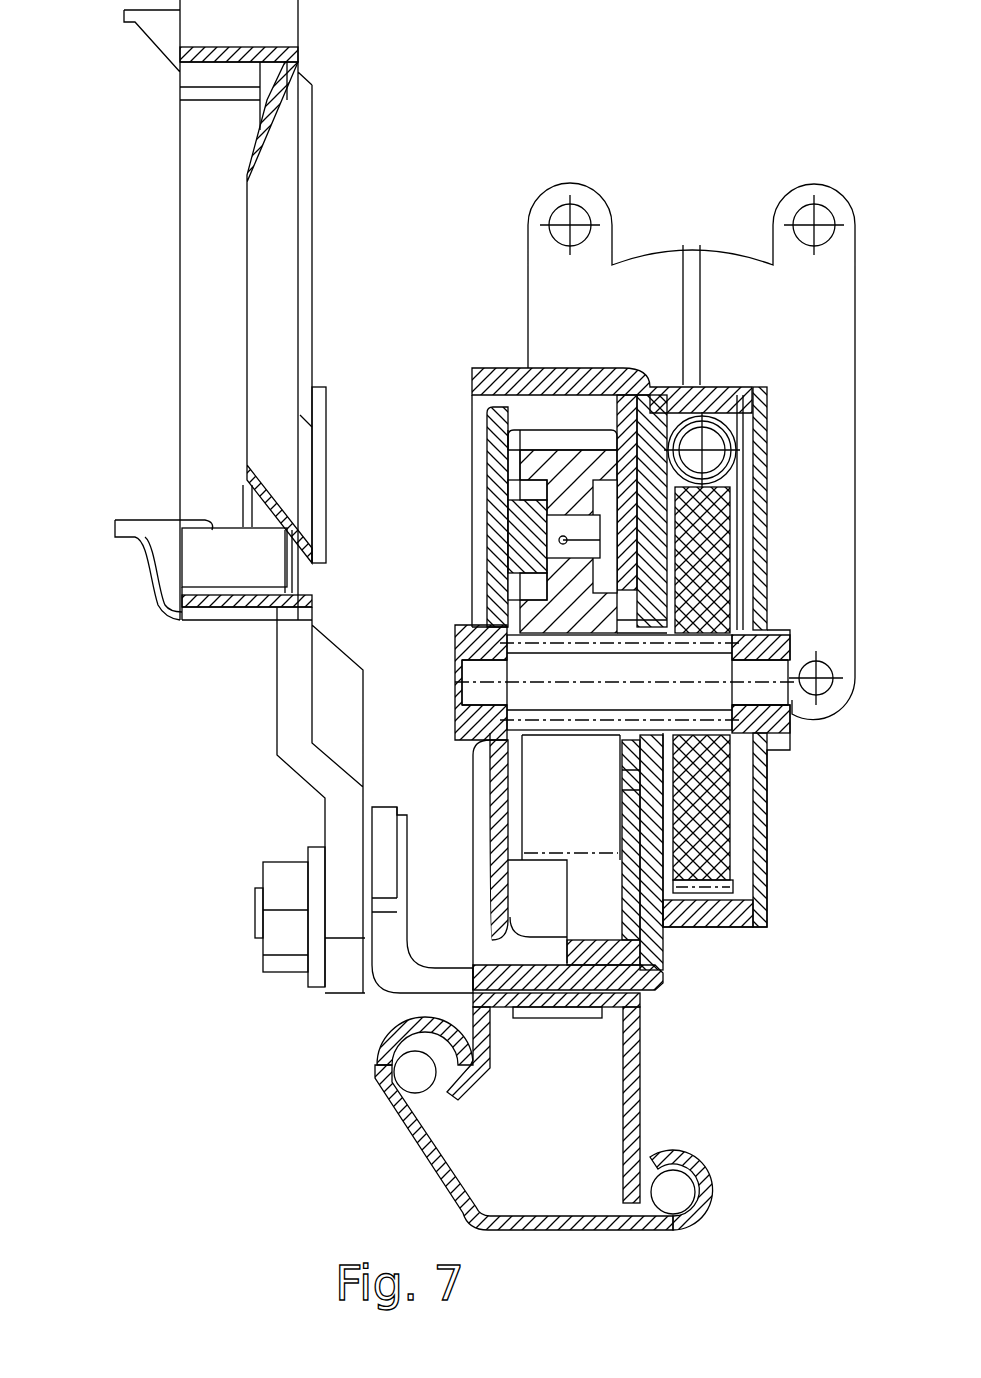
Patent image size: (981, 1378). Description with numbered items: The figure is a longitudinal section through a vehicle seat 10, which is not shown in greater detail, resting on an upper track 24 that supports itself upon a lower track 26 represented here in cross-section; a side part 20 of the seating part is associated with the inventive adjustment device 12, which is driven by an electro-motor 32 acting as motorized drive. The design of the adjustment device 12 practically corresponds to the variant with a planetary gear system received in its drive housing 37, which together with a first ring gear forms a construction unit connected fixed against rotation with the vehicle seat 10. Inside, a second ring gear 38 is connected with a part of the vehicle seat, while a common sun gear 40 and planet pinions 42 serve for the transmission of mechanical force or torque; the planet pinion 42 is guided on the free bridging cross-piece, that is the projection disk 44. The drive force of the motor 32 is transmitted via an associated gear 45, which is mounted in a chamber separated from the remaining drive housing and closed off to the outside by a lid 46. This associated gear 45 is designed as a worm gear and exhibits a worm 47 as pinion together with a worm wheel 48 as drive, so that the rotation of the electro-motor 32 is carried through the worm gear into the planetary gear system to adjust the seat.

The vehicle seat 10 is at (128, 596).
The adjustment device 12 is at (768, 873).
The side part 20 is at (232, 318).
The upper track 24 is at (640, 1088).
The lower track 26 is at (425, 1152).
The electro-motor 32 is at (655, 277).
The drive housing 37 is at (593, 410).
The second ring gear 38 is at (505, 955).
The common sun gear 40 is at (545, 695).
The planet pinions 42 is at (508, 441).
The projection disk 44 is at (518, 543).
The associated gear 45 is at (768, 778).
The lid 46 is at (765, 560).
The worm 47 is at (703, 450).
The worm wheel 48 is at (703, 577).